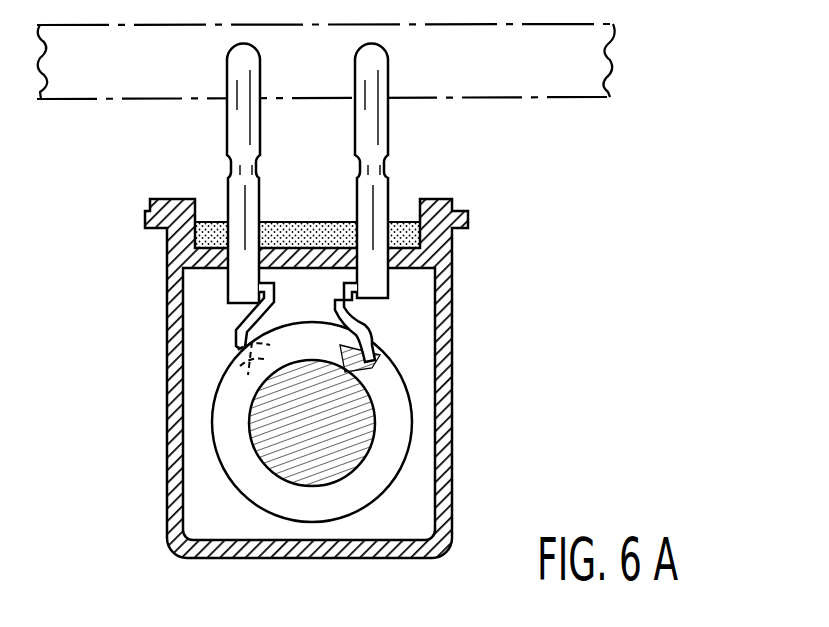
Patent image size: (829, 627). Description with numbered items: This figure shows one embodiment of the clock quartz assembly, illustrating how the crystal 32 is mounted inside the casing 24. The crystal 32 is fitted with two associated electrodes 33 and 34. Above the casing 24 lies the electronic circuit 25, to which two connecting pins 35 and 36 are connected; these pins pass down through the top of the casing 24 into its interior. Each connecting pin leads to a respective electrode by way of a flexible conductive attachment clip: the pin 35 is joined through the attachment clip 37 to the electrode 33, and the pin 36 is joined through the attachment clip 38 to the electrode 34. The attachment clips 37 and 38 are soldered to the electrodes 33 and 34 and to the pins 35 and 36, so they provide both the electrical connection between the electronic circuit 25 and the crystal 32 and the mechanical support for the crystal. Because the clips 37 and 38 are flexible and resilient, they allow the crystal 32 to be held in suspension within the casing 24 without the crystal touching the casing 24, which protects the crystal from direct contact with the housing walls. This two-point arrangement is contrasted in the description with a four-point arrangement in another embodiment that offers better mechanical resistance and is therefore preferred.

The casing 24 is at (460, 496).
The electronic circuit 25 is at (580, 88).
The crystal 32 is at (225, 452).
The electrode 33 is at (342, 384).
The electrode 34 is at (255, 365).
The connecting pin 35 is at (382, 113).
The connecting pin 36 is at (235, 103).
The flexible conductive attachment clip 37 is at (375, 318).
The flexible conductive attachment clip 38 is at (258, 318).